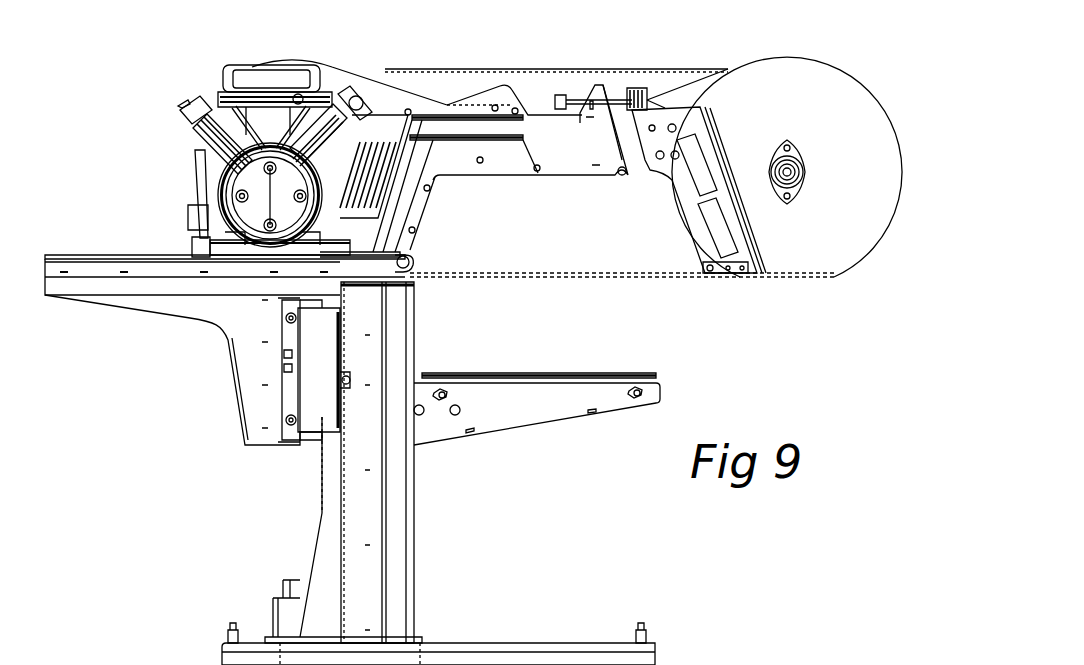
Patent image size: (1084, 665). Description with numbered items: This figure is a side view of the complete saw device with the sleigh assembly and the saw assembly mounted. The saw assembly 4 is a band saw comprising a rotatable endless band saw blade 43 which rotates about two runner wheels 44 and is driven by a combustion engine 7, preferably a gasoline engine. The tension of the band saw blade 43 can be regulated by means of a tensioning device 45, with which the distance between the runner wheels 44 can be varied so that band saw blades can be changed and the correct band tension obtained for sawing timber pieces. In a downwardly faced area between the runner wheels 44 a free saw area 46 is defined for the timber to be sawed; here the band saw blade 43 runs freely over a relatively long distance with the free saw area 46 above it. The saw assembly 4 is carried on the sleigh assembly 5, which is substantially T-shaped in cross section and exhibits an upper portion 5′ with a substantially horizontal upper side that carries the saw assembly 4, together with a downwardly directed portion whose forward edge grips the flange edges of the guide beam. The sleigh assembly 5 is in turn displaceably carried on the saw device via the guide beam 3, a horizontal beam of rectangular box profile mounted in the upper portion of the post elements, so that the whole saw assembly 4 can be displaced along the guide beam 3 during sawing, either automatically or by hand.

The guide beam 3 is at (328, 418).
The saw assembly 4 is at (661, 53).
The sleigh assembly 5 is at (118, 322).
The upper portion 5′ is at (117, 270).
The combustion engine 7 is at (198, 180).
The band saw blade 43 is at (512, 68).
The runner wheels 44 is at (346, 72).
The tensioning device 45 is at (610, 86).
The free saw area 46 is at (616, 246).